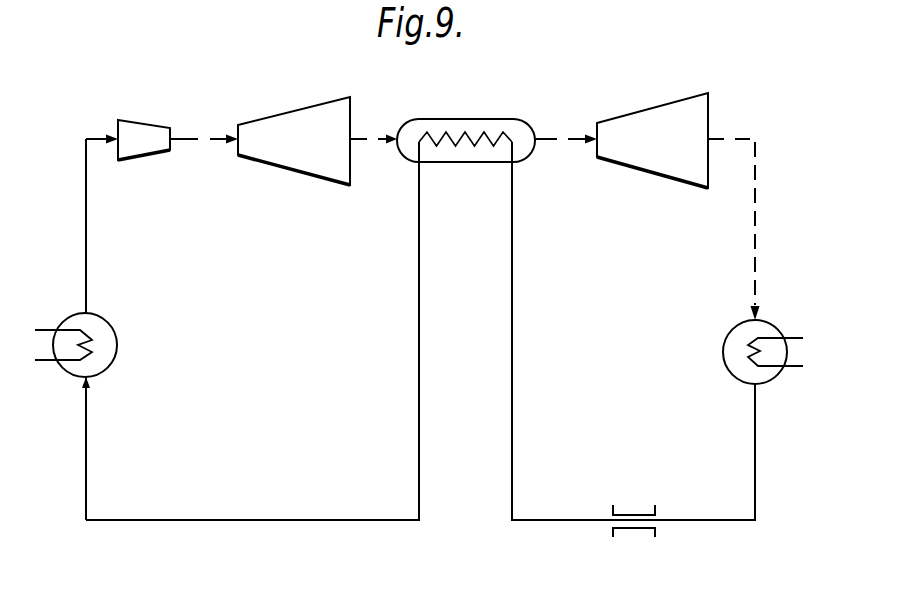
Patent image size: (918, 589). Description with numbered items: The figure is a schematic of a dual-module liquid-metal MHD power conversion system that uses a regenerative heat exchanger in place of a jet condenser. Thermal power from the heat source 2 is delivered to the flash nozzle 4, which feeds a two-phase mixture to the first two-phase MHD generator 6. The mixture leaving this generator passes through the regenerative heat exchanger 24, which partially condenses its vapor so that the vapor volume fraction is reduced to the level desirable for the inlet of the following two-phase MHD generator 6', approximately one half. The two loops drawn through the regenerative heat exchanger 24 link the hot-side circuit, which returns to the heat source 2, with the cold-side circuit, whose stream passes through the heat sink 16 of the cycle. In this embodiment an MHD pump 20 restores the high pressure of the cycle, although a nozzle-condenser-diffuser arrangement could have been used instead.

The heat source 2 is at (73, 367).
The flash nozzle 4 is at (140, 143).
The two-phase MHD generator 6 is at (294, 150).
The second two-phase MHD generator 6' is at (652, 150).
The heat sink 16 is at (737, 368).
The MHD pump 20 is at (635, 530).
The regenerative heat exchanger 24 is at (468, 150).